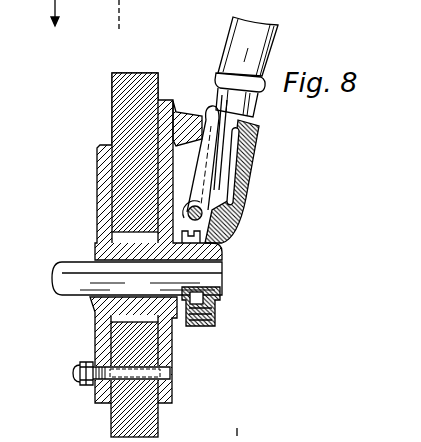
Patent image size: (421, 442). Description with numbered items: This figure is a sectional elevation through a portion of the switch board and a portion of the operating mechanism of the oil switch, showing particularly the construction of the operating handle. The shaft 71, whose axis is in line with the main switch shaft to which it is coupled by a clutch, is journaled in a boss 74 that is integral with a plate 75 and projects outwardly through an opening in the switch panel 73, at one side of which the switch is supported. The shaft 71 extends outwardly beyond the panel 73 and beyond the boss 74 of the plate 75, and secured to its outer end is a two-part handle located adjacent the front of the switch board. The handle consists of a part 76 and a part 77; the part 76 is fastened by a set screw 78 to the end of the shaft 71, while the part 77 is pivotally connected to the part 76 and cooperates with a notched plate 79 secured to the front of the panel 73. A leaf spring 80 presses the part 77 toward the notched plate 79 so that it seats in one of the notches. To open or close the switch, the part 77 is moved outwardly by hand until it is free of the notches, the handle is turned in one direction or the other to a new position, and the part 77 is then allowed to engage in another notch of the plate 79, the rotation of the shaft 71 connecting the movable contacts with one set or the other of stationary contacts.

The shaft 71 is at (80, 262).
The switch panel 73 is at (158, 414).
The boss 74 is at (100, 333).
The plate 75 is at (97, 212).
The handle part 76 is at (236, 184).
The handle part 77 is at (246, 98).
The set screw 78 is at (208, 323).
The notched plate 79 is at (184, 117).
The leaf spring 80 is at (232, 151).